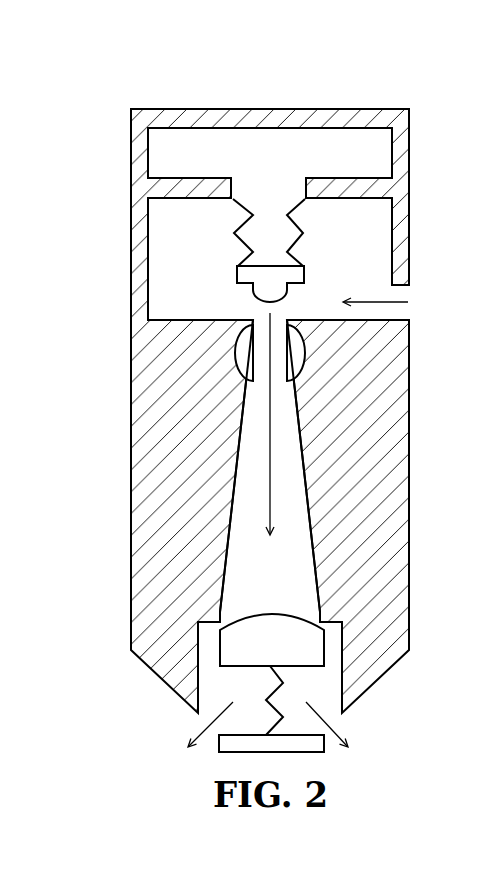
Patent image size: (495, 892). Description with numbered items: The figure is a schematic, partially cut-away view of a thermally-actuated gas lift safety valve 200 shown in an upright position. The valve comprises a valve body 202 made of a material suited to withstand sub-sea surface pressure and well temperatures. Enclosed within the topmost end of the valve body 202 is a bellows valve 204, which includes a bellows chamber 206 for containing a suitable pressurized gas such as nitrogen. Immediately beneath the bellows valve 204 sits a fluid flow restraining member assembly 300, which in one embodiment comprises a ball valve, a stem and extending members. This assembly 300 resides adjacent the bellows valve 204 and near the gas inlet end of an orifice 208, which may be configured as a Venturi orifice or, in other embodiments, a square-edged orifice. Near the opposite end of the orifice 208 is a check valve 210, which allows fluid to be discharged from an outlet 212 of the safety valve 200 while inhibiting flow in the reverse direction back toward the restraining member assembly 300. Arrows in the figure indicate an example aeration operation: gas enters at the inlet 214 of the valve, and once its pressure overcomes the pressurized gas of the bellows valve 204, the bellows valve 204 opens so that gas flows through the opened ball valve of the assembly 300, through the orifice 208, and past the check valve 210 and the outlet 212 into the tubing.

The thermally-actuated gas lift safety valve 200 is at (263, 411).
The valve body 202 is at (133, 243).
The bellows valve 204 is at (237, 273).
The bellows chamber 206 is at (275, 143).
The orifice 208 is at (243, 508).
The check valve 210 is at (222, 633).
The outlet 212 is at (320, 729).
The inlet flow 214 is at (413, 303).
The fluid flow restraining member assembly 300 is at (236, 357).